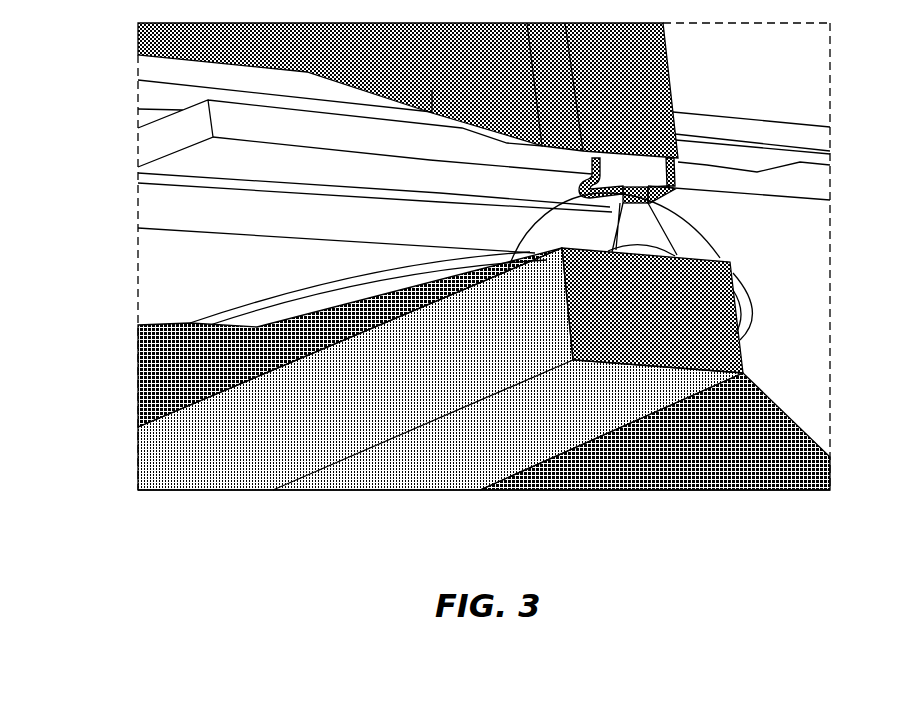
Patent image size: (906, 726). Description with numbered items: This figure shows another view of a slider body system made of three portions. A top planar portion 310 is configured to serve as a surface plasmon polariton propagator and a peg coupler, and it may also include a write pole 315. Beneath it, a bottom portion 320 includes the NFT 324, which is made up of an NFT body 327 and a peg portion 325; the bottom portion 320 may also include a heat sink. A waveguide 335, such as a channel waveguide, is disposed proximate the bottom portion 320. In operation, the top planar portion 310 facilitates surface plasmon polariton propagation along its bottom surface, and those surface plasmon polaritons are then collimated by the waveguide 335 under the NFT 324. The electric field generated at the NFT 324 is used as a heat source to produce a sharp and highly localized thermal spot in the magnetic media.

The top planar portion 310 is at (103, 25).
The write pole 315 is at (617, 32).
The bottom portion 320 is at (103, 175).
The NFT 324 is at (672, 206).
The peg portion 325 is at (603, 209).
The NFT body 327 is at (645, 243).
The waveguide 335 is at (722, 360).